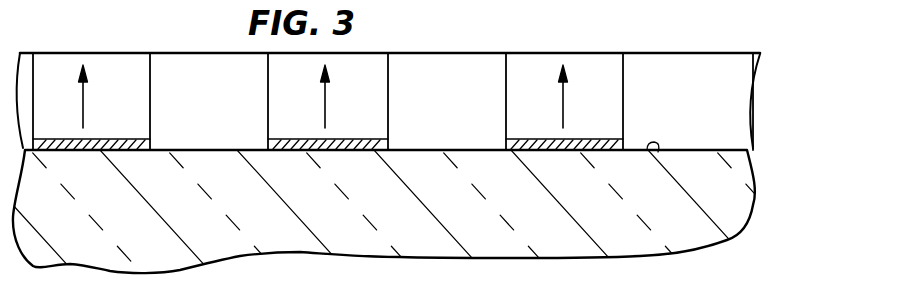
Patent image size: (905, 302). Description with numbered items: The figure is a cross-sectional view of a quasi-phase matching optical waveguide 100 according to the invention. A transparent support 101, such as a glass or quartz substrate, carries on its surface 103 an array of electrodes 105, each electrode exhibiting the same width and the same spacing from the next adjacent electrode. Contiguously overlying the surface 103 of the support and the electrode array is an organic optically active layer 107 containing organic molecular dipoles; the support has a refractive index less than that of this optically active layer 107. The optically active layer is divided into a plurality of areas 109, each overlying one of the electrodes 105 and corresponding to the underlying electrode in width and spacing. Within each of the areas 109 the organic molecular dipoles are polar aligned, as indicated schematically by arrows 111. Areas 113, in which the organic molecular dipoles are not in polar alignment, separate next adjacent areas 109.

The quasi-phase matching optical waveguide 100 is at (535, 34).
The transparent support 101 is at (751, 199).
The surface 103 is at (658, 152).
The electrodes 105 is at (512, 141).
The organic optically active layer 107 is at (755, 107).
The areas 109 is at (615, 108).
The arrows 111 is at (325, 107).
The areas 113 is at (443, 63).